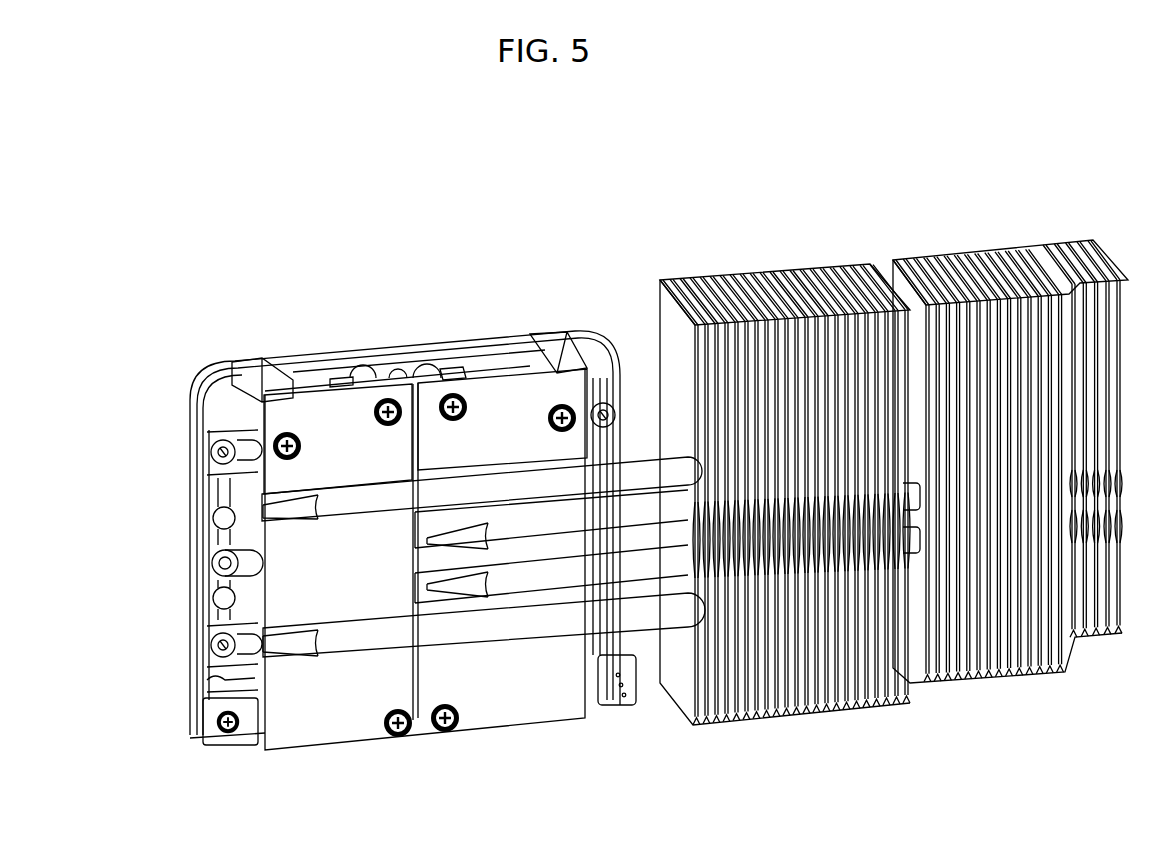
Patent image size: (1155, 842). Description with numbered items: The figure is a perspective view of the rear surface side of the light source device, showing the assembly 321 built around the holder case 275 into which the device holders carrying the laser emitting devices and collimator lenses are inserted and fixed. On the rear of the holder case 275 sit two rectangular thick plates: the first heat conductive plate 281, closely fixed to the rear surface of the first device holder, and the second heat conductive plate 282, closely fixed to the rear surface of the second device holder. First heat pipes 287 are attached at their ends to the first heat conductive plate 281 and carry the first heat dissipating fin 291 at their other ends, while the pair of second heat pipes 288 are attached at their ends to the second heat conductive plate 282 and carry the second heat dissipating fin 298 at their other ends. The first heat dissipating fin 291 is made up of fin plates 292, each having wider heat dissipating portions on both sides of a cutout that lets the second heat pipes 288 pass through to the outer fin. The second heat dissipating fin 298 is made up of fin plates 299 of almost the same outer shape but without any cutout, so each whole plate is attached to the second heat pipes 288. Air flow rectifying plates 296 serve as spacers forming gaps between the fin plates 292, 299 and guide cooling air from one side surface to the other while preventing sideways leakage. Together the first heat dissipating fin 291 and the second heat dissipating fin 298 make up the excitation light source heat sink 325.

The holder case 275 is at (218, 405).
The first heat conductive plate 281 is at (330, 418).
The second heat conductive plate 282 is at (500, 405).
The first heat pipes 287 is at (335, 640).
The second heat pipes 288 is at (570, 520).
The first heat dissipating fin 291 is at (744, 440).
The fin plates 292 is at (785, 502).
The air flow rectifying plates 296 is at (785, 495).
The second heat dissipating fin 298 is at (1014, 447).
The fin plates 299 is at (1007, 471).
The light source module 321 is at (402, 506).
The excitation light source heat sink 325 is at (852, 418).